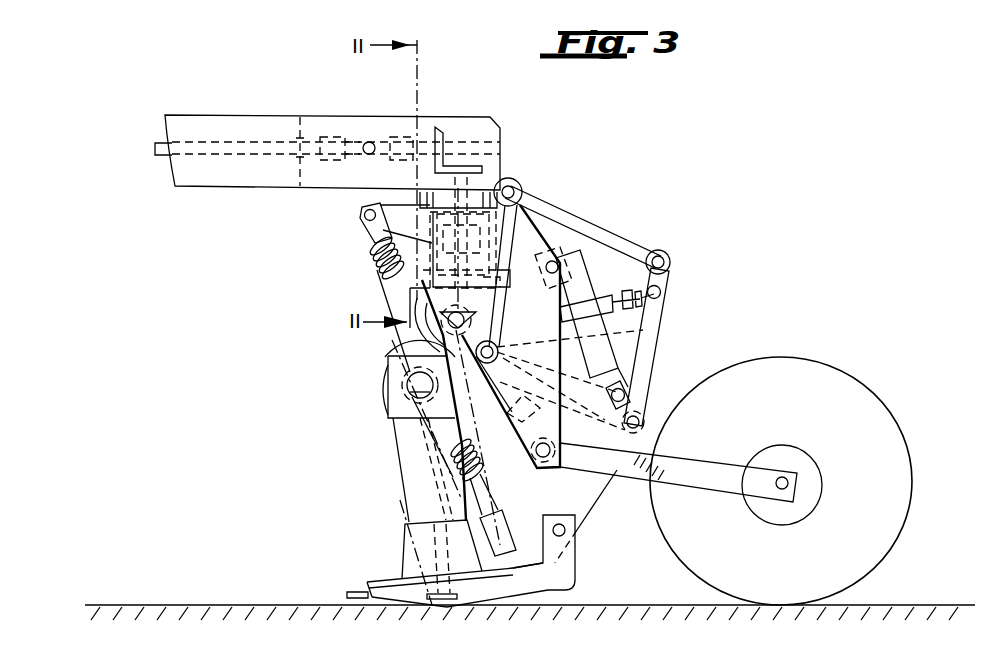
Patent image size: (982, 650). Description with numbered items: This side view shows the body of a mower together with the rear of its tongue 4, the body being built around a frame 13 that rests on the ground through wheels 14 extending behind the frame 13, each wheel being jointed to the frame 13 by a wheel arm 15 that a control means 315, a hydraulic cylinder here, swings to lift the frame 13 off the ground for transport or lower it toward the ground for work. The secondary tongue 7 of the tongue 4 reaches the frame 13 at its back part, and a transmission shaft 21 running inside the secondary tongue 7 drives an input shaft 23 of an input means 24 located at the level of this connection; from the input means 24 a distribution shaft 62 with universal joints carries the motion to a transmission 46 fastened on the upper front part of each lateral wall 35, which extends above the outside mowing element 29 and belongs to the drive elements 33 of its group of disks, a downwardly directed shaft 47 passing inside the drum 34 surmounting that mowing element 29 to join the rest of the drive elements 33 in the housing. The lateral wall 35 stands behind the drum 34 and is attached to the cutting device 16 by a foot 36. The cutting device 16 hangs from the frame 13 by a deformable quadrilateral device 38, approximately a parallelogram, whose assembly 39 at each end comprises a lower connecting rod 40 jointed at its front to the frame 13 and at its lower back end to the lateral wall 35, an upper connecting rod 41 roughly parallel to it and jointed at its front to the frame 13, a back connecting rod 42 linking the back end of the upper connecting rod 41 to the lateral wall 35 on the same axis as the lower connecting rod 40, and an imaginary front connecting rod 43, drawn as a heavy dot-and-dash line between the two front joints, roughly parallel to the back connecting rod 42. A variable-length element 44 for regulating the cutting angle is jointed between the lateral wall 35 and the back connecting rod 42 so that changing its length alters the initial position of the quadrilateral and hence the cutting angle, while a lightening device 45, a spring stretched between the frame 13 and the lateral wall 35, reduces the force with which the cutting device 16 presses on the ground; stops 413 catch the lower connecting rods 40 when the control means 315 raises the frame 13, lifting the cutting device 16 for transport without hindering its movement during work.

The tongue 4 is at (215, 110).
The secondary tongue 7 is at (273, 126).
The transmission shaft 21 is at (162, 143).
The input shaft 23 is at (400, 147).
The input means 24 is at (497, 137).
The frame 13 is at (394, 295).
The wheels 14 is at (895, 452).
The wheel arm 15 is at (708, 480).
The cutting device 16 is at (372, 470).
The mowing element 29 is at (393, 578).
The drive elements 33 is at (431, 610).
The drum 34 is at (411, 540).
The lateral wall 35 is at (584, 505).
The foot 36 is at (571, 567).
The deformable quadrilateral device 38 is at (613, 197).
The assembly 39 is at (641, 240).
The lower connecting rod 40 is at (588, 403).
The upper connecting rod 41 is at (538, 200).
The back connecting rod 42 is at (655, 318).
The imaginary front connecting rod 43 is at (503, 303).
The element for regulating the cutting angle 44 is at (598, 306).
The lightening device 45 is at (372, 248).
The transmission 46 is at (400, 372).
The shaft 47 is at (420, 440).
The distribution shaft 62 is at (445, 339).
The control means 315 is at (603, 350).
The stops 413 is at (512, 412).